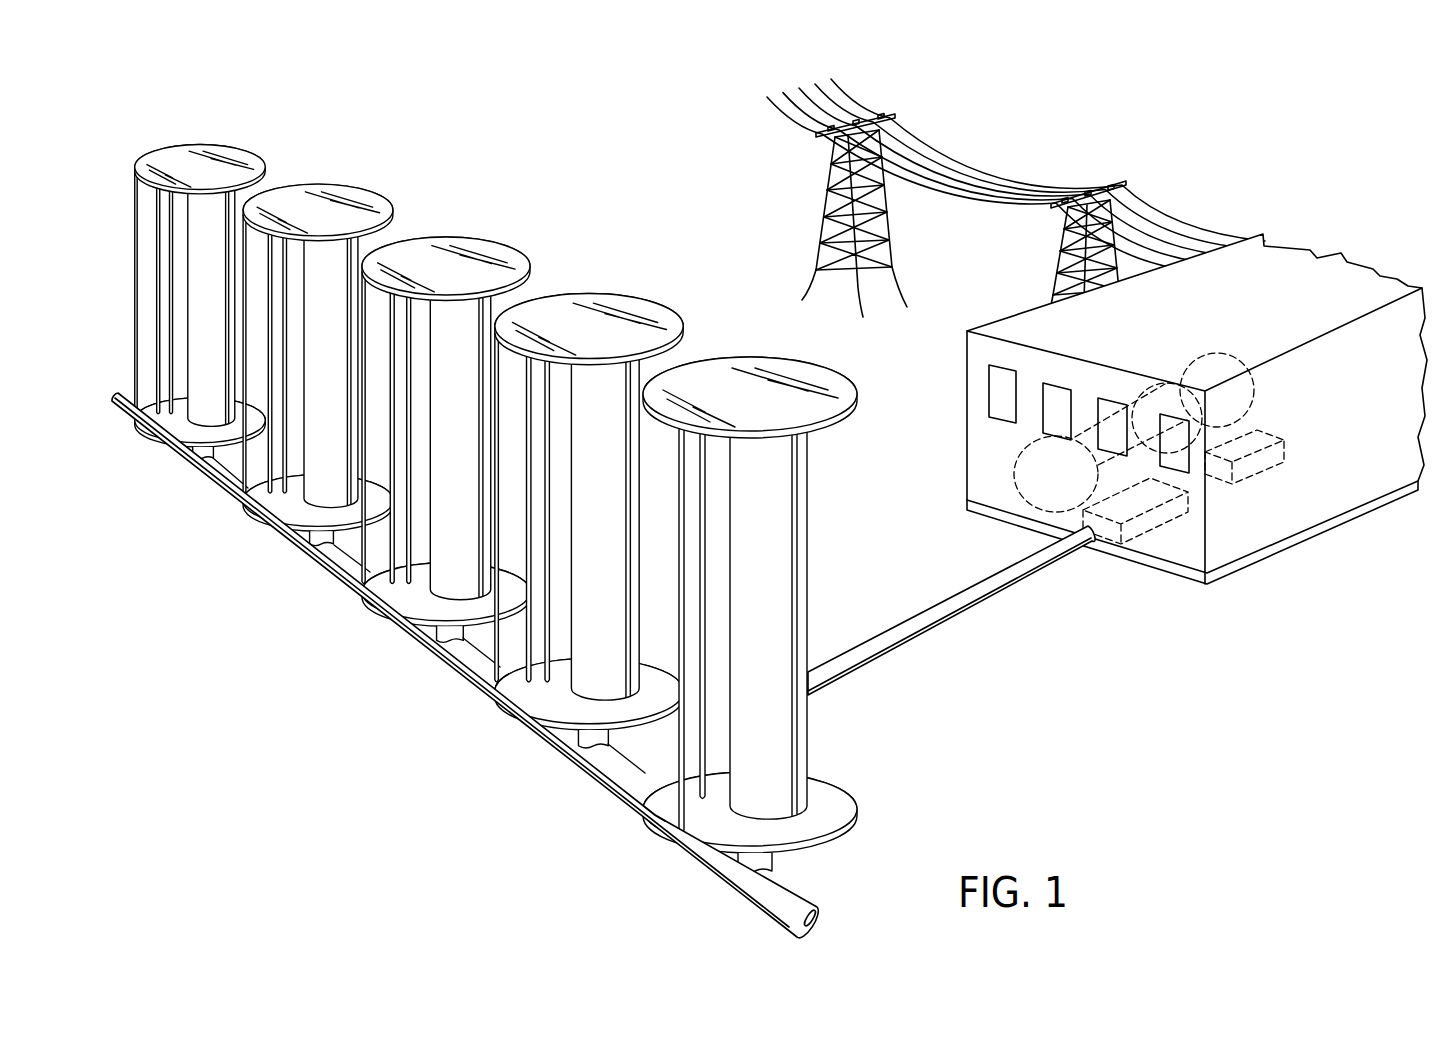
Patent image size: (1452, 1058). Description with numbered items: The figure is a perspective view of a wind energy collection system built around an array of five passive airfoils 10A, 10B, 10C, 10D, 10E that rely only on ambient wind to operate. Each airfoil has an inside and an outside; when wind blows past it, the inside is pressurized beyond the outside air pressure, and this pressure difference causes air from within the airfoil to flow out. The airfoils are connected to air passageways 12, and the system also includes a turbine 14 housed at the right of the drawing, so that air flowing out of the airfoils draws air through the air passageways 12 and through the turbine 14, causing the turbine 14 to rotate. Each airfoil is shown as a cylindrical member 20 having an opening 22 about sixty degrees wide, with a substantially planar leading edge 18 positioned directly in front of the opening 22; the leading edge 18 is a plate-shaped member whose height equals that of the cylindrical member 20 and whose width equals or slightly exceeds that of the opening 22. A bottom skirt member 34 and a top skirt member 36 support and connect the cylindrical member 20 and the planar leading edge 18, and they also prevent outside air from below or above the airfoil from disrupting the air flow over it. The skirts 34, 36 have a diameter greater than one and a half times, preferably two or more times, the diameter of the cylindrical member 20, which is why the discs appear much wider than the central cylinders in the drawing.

The airfoil 10A is at (796, 597).
The airfoil 10B is at (652, 290).
The airfoil 10C is at (521, 236).
The airfoil 10D is at (388, 182).
The airfoil 10E is at (246, 137).
The air passageways 12 is at (351, 573).
The turbine 14 is at (1163, 542).
The substantially planar leading edge 18 is at (660, 807).
The cylindrical member 20 is at (785, 742).
The opening 22 is at (718, 598).
The bottom skirt member 34 is at (840, 801).
The top skirt member 36 is at (835, 405).